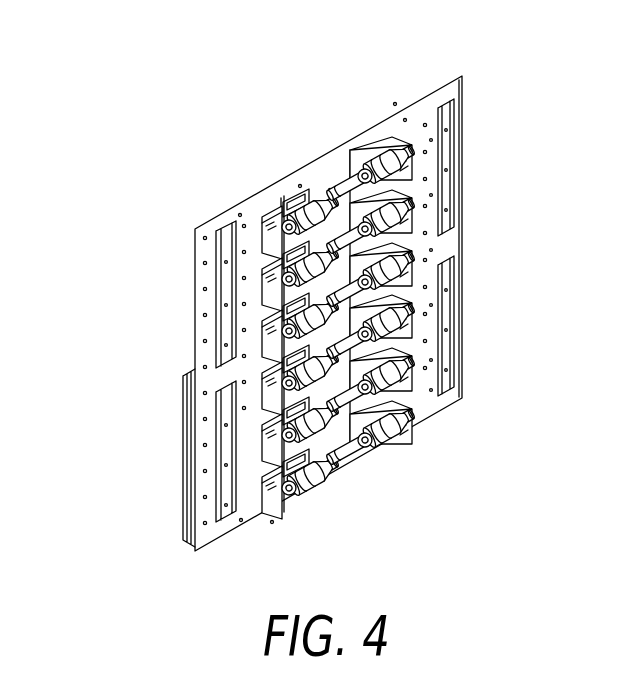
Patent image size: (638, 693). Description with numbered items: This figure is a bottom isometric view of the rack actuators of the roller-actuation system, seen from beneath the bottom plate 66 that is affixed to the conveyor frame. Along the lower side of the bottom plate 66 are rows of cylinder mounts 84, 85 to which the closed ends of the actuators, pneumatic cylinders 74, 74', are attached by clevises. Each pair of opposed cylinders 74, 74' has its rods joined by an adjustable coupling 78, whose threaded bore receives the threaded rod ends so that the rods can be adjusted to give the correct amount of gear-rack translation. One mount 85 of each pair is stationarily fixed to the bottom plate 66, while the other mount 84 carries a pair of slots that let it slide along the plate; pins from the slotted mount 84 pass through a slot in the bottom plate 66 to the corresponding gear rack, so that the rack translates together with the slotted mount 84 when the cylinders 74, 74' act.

The bottom plate 66 is at (450, 252).
The slotted cylinder mount 84 is at (273, 213).
The stationary cylinder mount 85 is at (390, 146).
The adjustable coupling 78 is at (342, 190).
The pneumatic cylinder 74 is at (321, 508).
The pneumatic cylinder 74' is at (370, 333).